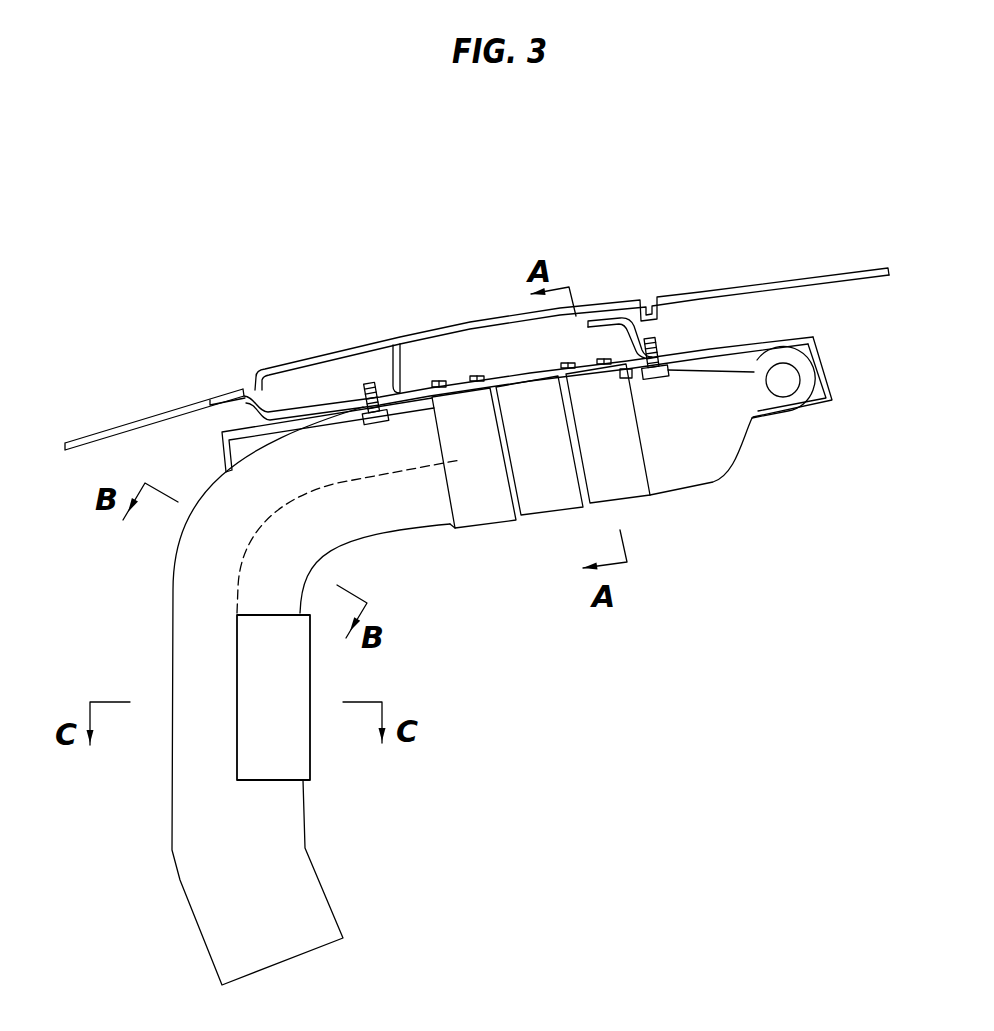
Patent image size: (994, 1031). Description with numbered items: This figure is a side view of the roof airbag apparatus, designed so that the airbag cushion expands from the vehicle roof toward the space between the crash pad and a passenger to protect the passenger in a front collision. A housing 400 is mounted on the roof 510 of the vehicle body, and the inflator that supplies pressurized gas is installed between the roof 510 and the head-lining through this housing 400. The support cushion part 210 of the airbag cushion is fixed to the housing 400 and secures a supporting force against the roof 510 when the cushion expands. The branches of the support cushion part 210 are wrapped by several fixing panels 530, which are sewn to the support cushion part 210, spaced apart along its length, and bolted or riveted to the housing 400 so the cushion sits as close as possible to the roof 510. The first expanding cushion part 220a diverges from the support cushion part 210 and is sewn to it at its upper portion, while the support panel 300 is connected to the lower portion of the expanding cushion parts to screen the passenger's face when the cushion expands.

The support cushion part 210 is at (720, 455).
The first expanding cushion part 220a is at (305, 903).
The support panel 300 is at (303, 762).
The housing 400 is at (466, 379).
The roof 510 is at (704, 291).
The fixing panel 530 is at (485, 520).